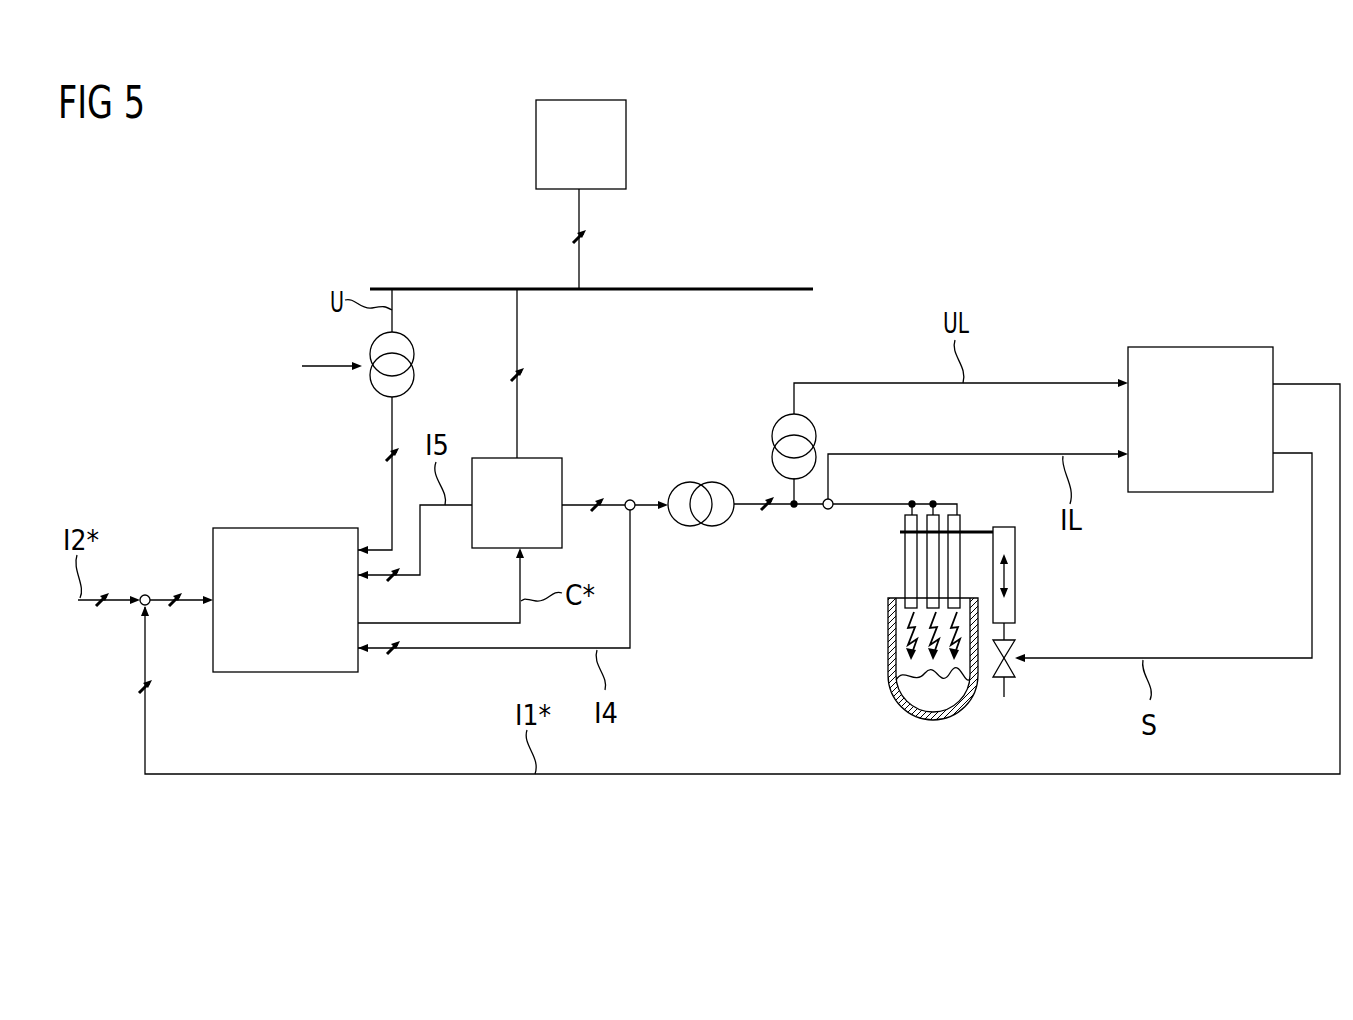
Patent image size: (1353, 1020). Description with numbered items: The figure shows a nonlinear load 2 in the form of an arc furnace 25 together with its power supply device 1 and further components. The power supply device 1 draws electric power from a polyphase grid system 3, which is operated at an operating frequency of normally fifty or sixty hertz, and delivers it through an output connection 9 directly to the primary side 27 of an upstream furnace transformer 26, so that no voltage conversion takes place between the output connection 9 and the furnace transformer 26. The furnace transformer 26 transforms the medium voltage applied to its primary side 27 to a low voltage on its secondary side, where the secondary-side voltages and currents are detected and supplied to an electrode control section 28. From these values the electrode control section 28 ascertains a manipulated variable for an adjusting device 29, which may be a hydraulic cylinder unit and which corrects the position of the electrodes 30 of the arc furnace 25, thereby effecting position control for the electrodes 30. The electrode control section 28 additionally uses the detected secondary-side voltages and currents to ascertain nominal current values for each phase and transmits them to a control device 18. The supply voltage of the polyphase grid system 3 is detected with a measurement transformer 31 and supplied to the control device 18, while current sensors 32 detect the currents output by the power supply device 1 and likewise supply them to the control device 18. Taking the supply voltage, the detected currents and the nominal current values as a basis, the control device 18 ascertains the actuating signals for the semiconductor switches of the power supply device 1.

The polyphase grid system 3 is at (536, 148).
The measurement transformer 31 is at (370, 350).
The power supply device 1 is at (490, 458).
The output connection 9 is at (568, 497).
The current sensor 32 is at (630, 499).
The primary side 27 is at (687, 447).
The furnace transformer 26 is at (713, 527).
The control device 18 is at (285, 528).
The electrodes 30 is at (905, 565).
The adjusting device 29 is at (1015, 575).
The electrode control section 28 is at (1200, 347).
The arc furnace 25 is at (890, 695).
The nonlinear load 2 is at (812, 666).